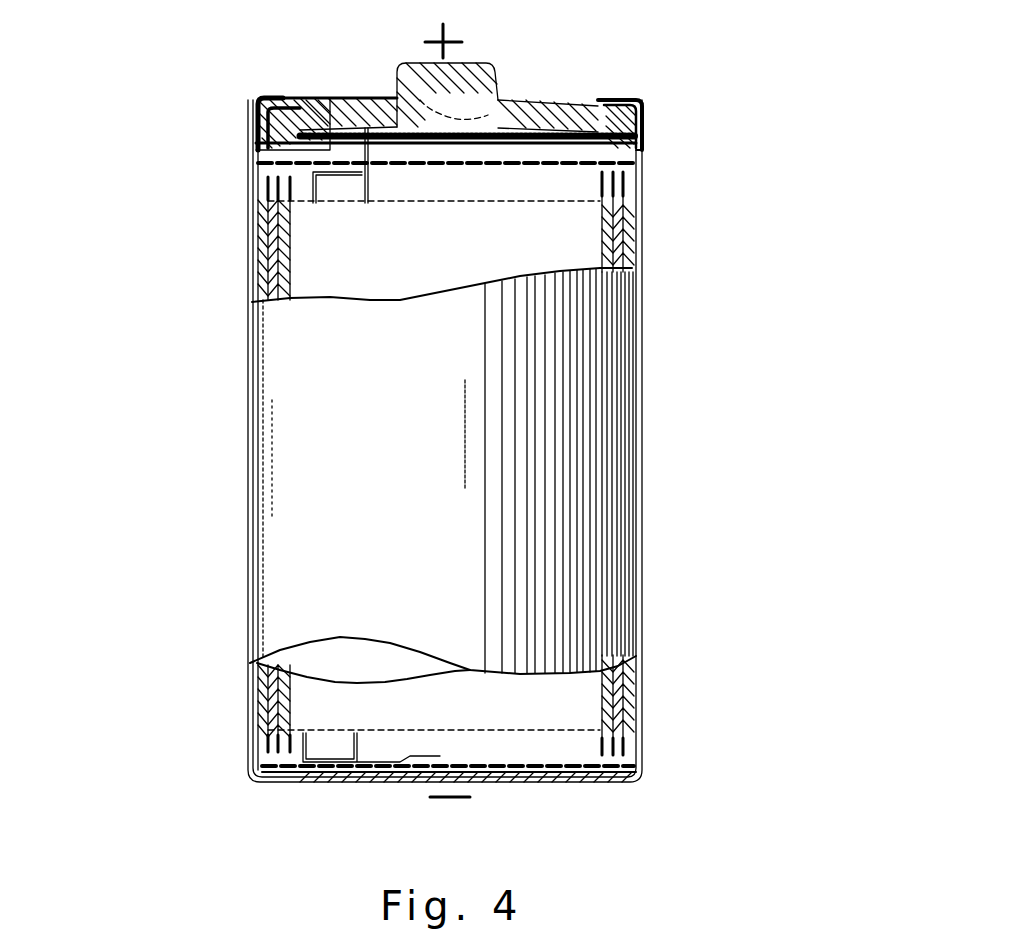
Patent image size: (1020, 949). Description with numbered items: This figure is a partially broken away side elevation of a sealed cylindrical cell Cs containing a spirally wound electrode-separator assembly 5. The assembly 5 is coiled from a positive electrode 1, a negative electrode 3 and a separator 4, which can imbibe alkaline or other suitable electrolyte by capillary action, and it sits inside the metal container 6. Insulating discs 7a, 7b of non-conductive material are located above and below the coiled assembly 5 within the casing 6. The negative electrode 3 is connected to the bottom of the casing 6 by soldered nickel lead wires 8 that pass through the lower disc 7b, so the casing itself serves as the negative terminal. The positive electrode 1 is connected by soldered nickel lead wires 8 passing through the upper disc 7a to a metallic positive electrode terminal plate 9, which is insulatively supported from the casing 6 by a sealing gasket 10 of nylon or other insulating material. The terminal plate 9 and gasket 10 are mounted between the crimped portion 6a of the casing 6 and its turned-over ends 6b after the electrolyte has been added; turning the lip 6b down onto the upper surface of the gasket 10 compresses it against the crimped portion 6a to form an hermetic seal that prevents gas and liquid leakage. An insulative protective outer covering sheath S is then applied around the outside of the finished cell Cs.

The positive electrode 1 is at (262, 272).
The negative electrode 3 is at (262, 240).
The separator 4 is at (627, 205).
The electrode-separator assembly 5 is at (250, 298).
The metal container 6 is at (637, 190).
The crimped portion 6a is at (641, 149).
The turned-over ends 6b is at (604, 98).
The insulating disc 7a is at (478, 168).
The insulating disc 7b is at (534, 766).
The lead wires 8 is at (365, 188).
The positive electrode terminal plate 9 is at (535, 58).
The sealing gasket 10 is at (320, 104).
The protective outer covering sheath S is at (290, 574).
The cell Cs is at (648, 450).